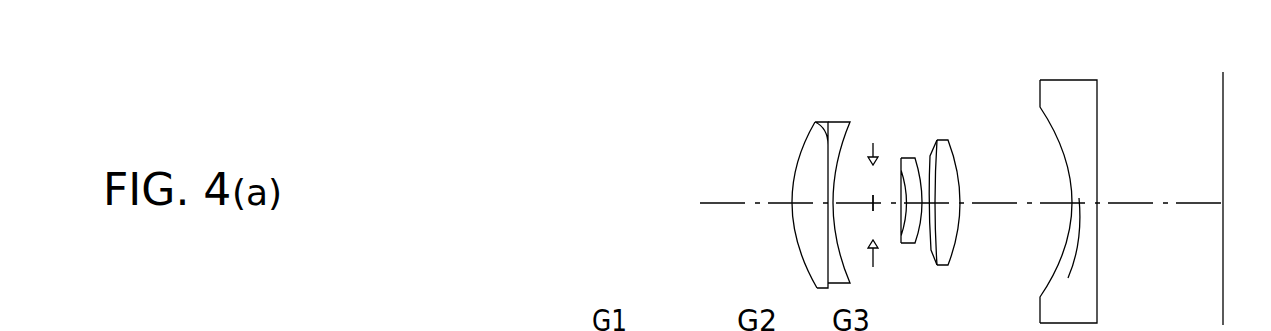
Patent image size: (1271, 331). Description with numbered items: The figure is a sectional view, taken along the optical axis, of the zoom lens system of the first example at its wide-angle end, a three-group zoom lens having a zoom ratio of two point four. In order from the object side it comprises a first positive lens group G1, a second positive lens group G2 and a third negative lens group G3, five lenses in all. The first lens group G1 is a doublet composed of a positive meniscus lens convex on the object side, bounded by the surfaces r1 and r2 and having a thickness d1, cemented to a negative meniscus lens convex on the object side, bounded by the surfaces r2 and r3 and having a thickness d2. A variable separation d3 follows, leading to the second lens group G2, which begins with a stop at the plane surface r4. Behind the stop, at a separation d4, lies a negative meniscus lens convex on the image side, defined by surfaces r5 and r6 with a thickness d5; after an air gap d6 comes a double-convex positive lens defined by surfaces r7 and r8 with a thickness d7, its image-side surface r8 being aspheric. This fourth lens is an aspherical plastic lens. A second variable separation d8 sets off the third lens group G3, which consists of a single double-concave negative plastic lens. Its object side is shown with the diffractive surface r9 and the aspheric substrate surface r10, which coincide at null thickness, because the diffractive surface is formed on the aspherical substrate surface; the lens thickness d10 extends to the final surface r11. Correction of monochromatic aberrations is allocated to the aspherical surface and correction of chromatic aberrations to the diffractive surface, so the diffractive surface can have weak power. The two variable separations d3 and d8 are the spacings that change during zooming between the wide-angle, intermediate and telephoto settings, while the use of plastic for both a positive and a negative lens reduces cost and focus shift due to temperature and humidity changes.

The first positive lens group G1 is at (852, 43).
The second positive lens group G2 is at (955, 43).
The third negative lens group G3 is at (1097, 42).
The radius of curvature of first lens surface r1 is at (803, 137).
The radius of curvature of second lens surface r2 is at (821, 128).
The radius of curvature of third lens surface r3 is at (847, 147).
The stop surface r4 is at (877, 180).
The radius of curvature of fifth lens surface r5 is at (903, 162).
The radius of curvature of sixth lens surface r6 is at (920, 170).
The radius of curvature of seventh lens surface r7 is at (930, 168).
The aspheric lens surface r8 is at (963, 165).
The diffractive surface r9 is at (1042, 117).
The aspheric substrate surface r10 is at (1052, 165).
The radius of curvature of eleventh lens surface r11 is at (1098, 115).
The first lens thickness d1 is at (810, 226).
The second lens thickness d2 is at (838, 245).
The variable separation between first and second lens groups d3 is at (860, 205).
The separation between stop and fifth surface d4 is at (887, 217).
The third lens thickness d5 is at (910, 289).
The separation between sixth and seventh surfaces d6 is at (949, 289).
The fourth lens thickness d7 is at (945, 226).
The variable separation between second and third lens groups d8 is at (1010, 226).
The fifth lens thickness d10 is at (1069, 297).